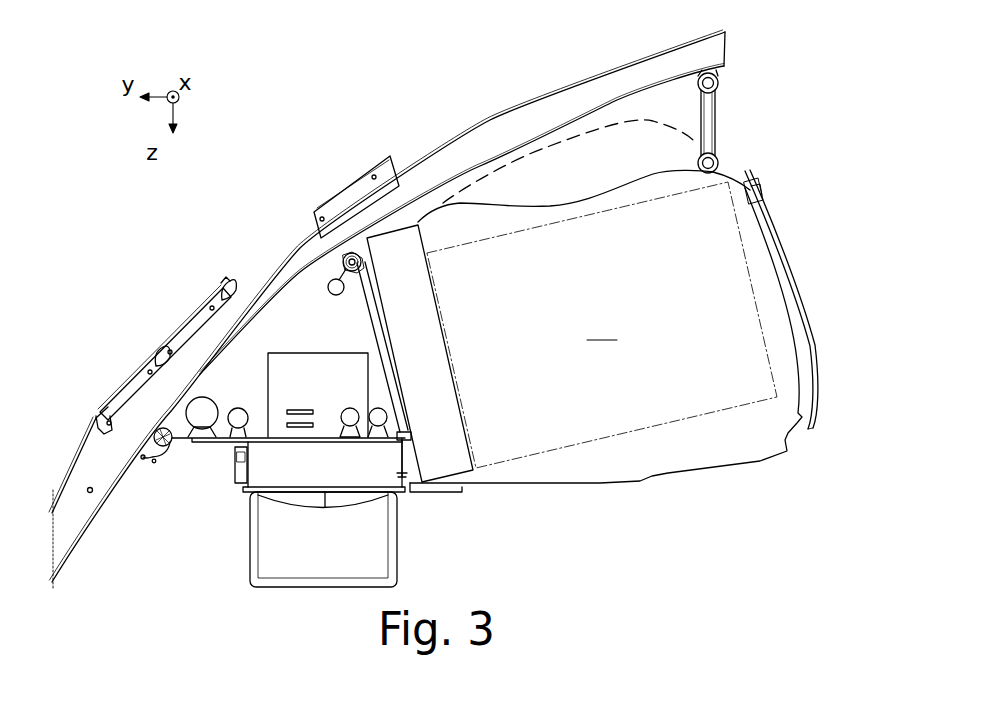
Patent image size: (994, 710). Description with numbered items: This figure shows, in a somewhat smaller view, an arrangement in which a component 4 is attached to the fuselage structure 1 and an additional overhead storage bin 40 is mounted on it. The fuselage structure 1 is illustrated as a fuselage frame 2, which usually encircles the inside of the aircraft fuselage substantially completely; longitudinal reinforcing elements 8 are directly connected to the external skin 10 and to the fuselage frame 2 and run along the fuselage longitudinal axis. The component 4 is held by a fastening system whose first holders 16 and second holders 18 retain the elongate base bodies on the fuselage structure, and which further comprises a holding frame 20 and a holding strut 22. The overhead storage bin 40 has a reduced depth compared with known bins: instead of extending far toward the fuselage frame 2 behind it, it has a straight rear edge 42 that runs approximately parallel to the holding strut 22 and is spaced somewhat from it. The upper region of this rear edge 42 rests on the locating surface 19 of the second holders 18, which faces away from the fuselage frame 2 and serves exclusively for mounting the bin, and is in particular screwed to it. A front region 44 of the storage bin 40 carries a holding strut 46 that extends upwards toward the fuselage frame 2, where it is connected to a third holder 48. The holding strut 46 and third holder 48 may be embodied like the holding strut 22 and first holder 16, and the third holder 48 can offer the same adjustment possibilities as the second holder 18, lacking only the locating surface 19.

The fuselage structure 1 is at (338, 146).
The fuselage frame 2 is at (588, 95).
The component 4 is at (301, 339).
The longitudinal reinforcing elements 8 is at (234, 280).
The external skin 10 is at (203, 300).
The first holders 16 is at (150, 418).
The second holders 18 is at (340, 296).
The locating surface 19 is at (380, 244).
The holding frame 20 is at (224, 450).
The holding strut 22 is at (385, 372).
The overhead storage bin 40 is at (614, 301).
The rear edge 42 is at (450, 305).
The front region 44 is at (716, 200).
The holding strut 46 is at (714, 124).
The third holder 48 is at (720, 76).